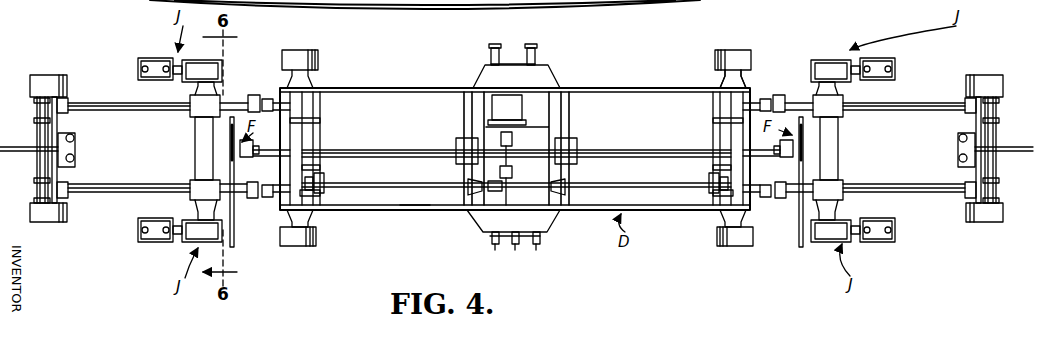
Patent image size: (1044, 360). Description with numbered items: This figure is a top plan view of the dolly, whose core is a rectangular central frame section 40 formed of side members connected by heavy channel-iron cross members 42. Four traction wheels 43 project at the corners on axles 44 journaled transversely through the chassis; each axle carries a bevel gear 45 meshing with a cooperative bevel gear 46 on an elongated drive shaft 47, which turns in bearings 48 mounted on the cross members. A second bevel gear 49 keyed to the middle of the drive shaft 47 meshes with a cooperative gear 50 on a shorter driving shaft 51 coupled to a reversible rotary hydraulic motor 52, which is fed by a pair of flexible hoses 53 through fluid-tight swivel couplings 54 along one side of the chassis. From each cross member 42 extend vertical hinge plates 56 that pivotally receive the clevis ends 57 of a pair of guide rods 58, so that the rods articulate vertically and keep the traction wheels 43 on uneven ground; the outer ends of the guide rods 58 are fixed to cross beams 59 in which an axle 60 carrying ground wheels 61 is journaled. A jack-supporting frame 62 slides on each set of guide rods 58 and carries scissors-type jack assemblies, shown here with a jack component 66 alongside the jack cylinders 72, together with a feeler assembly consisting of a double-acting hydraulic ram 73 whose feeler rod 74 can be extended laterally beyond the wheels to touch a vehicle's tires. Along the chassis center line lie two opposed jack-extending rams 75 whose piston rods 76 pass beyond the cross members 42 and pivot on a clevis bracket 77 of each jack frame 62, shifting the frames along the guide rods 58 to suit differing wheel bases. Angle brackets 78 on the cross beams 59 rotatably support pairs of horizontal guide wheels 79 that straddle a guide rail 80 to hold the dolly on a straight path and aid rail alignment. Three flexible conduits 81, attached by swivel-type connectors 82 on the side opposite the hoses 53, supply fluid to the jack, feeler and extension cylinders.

The central frame section 40 is at (400, 86).
The cross members 42 is at (752, 90).
The traction wheels 43 is at (306, 56).
The axles 44 is at (298, 102).
The bevel gear 45 is at (310, 196).
The cooperative bevel gear 46 is at (315, 185).
The drive shaft 47 is at (415, 207).
The bearings 48 is at (322, 183).
The second bevel gear 49 is at (508, 192).
The cooperative gear 50 is at (513, 172).
The driving shaft 51 is at (513, 139).
The hydraulic motor 52 is at (510, 100).
The flexible hoses 53 is at (531, 47).
The swivel couplings 54 is at (490, 57).
The hinge plates 56 is at (260, 95).
The clevis ends 57 is at (266, 99).
The guide rods 58 is at (103, 103).
The cross beams 59 is at (56, 125).
The axle 60 is at (37, 162).
The ground wheels 61 is at (40, 82).
The jack-supporting frame 62 is at (196, 133).
The cylinder 66 is at (198, 74).
The jack cylinders 72 is at (150, 62).
The hydraulic ram 73 is at (233, 120).
The feeler rod 74 is at (235, 233).
The jack-extending rams 75 is at (389, 150).
The piston rod 76 is at (272, 151).
The clevis bracket 77 is at (250, 158).
The angle brackets 78 is at (66, 136).
The guide wheels 79 is at (75, 138).
The guide rail 80 is at (1013, 147).
The flexible conduits 81 is at (537, 250).
The swivel-type connectors 82 is at (512, 238).